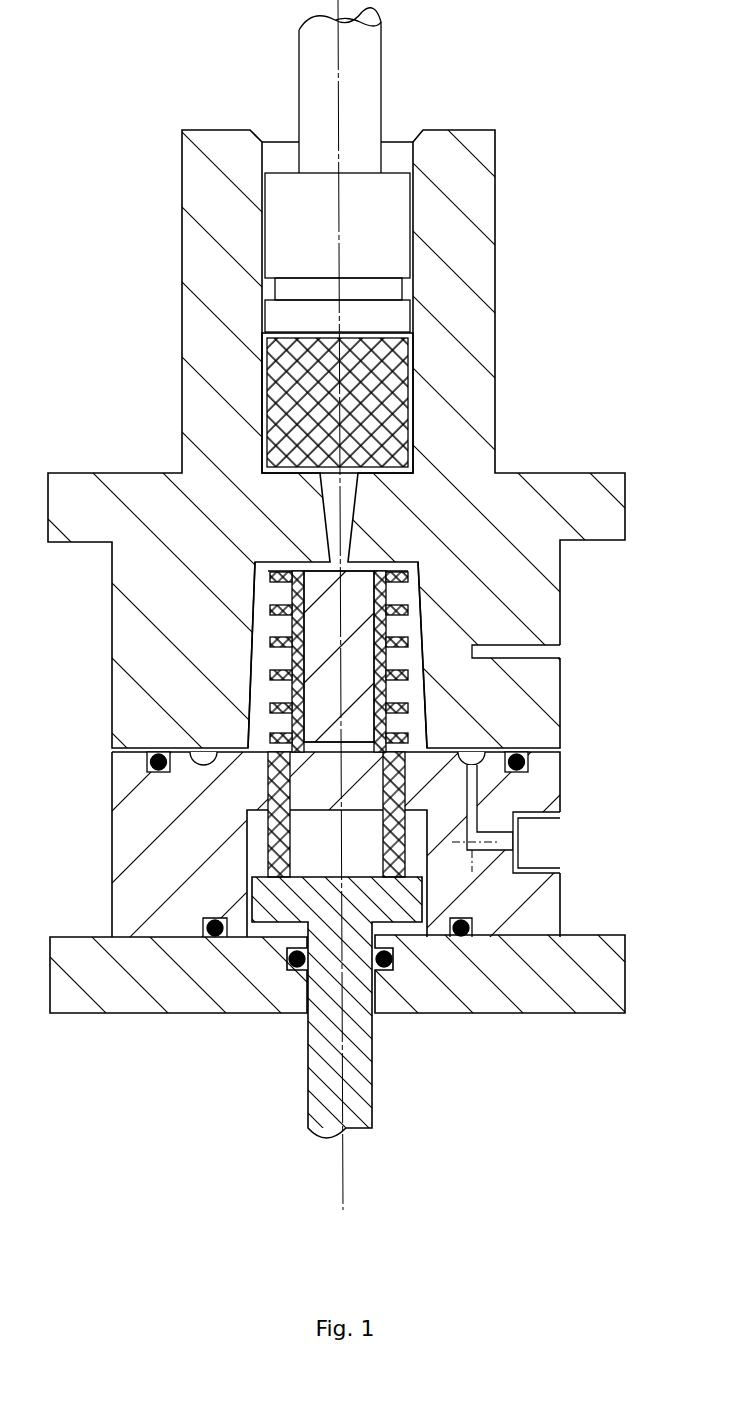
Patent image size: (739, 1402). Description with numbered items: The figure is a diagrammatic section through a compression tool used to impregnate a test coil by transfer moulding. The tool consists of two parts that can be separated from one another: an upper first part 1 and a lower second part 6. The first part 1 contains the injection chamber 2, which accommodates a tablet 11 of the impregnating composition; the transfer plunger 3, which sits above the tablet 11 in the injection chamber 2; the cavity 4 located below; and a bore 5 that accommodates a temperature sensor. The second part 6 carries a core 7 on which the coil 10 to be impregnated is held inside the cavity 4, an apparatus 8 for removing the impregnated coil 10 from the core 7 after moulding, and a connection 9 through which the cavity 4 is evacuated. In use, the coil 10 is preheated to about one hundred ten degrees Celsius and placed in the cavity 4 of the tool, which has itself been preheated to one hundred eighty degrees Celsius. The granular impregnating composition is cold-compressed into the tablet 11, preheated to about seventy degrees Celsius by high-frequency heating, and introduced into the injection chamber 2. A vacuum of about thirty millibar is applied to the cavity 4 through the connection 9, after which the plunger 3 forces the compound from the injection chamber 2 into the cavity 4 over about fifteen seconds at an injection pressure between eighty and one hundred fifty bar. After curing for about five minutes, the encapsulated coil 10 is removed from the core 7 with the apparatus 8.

The first part 1 is at (336, 475).
The injection chamber 2 is at (258, 403).
The transfer plunger 3 is at (337, 170).
The cavity 4 is at (337, 655).
The bore 5 is at (442, 651).
The second part 6 is at (337, 966).
The core 7 is at (339, 656).
The apparatus for removal 8 is at (337, 969).
The connection 9 is at (528, 840).
The coil 10 is at (339, 661).
The tablet 11 is at (337, 402).